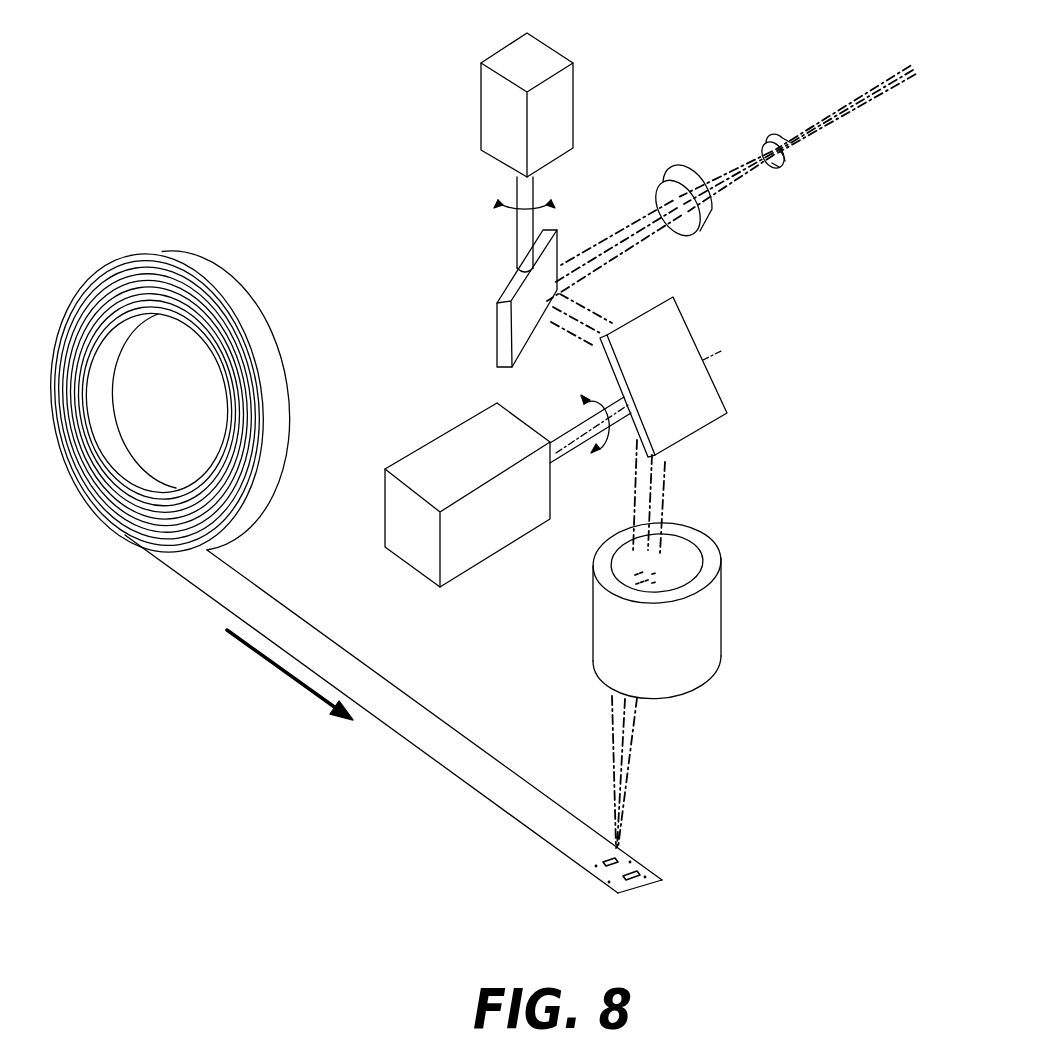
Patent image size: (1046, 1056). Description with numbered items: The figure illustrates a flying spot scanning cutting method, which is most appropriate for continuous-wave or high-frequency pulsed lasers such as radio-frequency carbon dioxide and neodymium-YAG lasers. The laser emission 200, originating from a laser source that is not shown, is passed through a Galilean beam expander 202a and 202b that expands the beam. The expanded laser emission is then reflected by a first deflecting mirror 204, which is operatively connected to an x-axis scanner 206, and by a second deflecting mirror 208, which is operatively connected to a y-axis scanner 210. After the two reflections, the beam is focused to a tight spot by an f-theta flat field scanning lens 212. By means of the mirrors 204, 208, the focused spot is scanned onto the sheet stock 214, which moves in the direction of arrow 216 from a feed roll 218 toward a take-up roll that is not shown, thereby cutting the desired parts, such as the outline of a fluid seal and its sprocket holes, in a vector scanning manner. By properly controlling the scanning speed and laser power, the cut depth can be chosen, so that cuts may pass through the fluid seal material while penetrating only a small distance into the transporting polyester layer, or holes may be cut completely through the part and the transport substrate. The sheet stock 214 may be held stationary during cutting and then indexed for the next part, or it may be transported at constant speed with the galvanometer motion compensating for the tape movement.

The laser emission 200 is at (852, 107).
The Galilean beam expander 202a is at (788, 165).
The Galilean beam expander 202b is at (703, 227).
The first deflecting mirror 204 is at (500, 328).
The x-axis scanner 206 is at (490, 110).
The second deflecting mirror 208 is at (702, 388).
The y-axis scanner 210 is at (483, 548).
The f-theta flat field scanning lens 212 is at (708, 633).
The sheet stock 214 is at (467, 785).
The arrow 216 is at (283, 672).
The feed roll 218 is at (240, 292).